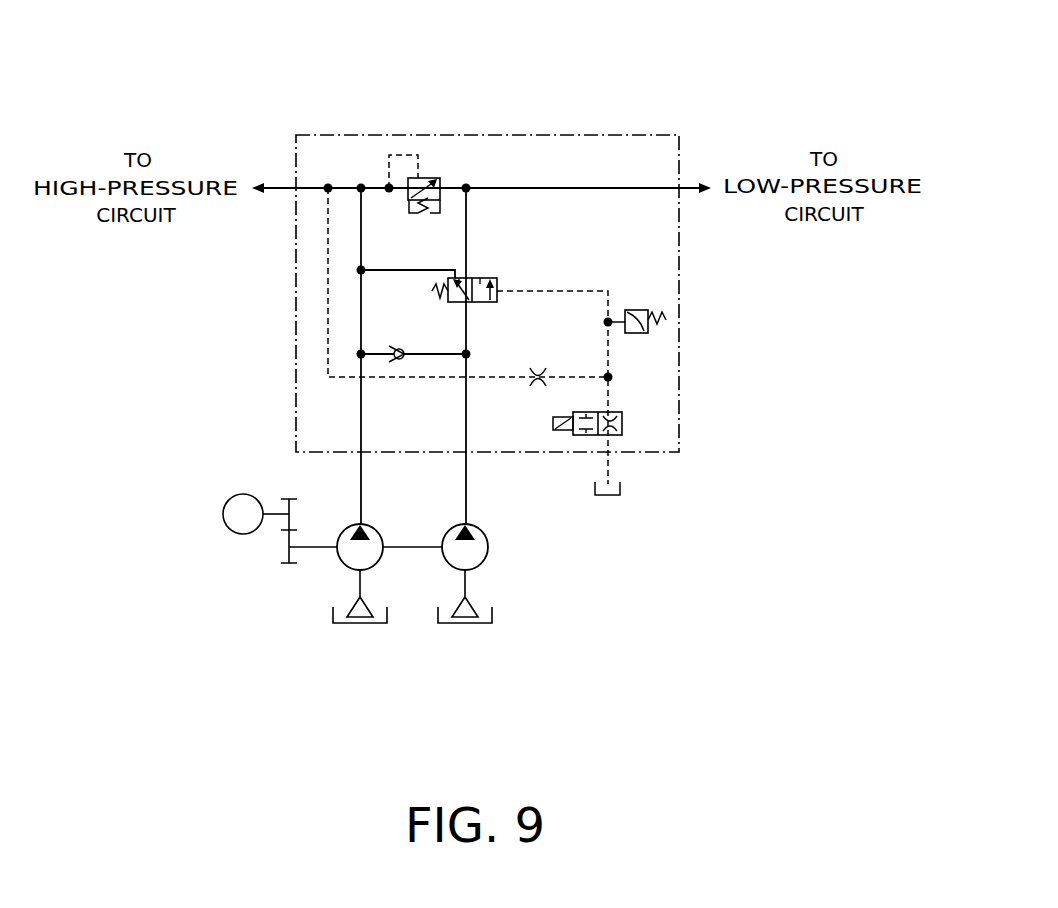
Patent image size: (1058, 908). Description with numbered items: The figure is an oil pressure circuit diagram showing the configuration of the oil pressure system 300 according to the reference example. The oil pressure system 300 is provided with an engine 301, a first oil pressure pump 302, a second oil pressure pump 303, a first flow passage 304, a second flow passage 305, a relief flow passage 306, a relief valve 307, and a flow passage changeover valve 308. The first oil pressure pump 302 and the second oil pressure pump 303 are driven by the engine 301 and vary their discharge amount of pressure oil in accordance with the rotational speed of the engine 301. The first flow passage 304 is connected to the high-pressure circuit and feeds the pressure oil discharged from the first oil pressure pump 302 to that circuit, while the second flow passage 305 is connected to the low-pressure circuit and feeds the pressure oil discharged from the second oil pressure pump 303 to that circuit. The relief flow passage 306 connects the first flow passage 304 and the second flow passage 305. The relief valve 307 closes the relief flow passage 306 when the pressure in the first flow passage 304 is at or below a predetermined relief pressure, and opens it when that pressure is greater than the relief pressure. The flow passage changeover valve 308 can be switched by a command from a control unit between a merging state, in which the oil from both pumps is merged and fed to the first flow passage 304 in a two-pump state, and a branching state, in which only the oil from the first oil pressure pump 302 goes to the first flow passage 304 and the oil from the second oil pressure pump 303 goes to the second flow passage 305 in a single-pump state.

The oil pressure system 300 is at (276, 72).
The engine 301 is at (231, 498).
The first oil pressure pump 302 is at (349, 527).
The second oil pressure pump 303 is at (450, 527).
The first flow passage 304 is at (361, 239).
The second flow passage 305 is at (466, 239).
The relief flow passage 306 is at (373, 186).
The relief valve 307 is at (432, 178).
The flow passage changeover valve 308 is at (486, 303).